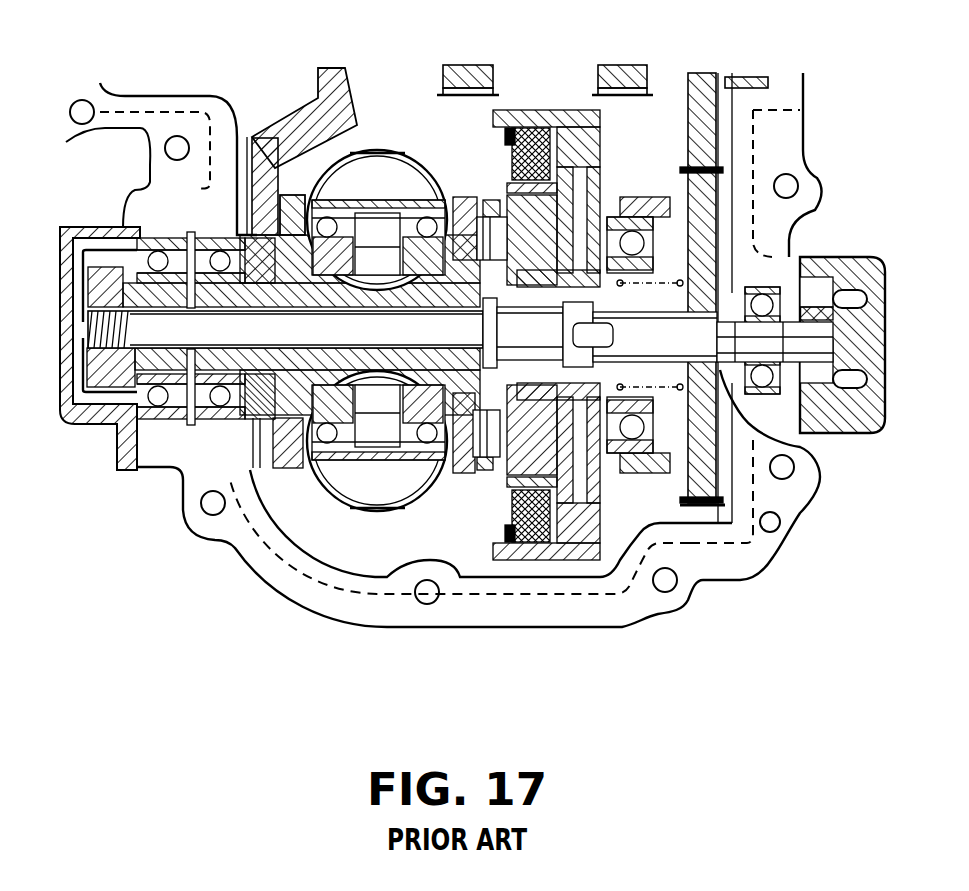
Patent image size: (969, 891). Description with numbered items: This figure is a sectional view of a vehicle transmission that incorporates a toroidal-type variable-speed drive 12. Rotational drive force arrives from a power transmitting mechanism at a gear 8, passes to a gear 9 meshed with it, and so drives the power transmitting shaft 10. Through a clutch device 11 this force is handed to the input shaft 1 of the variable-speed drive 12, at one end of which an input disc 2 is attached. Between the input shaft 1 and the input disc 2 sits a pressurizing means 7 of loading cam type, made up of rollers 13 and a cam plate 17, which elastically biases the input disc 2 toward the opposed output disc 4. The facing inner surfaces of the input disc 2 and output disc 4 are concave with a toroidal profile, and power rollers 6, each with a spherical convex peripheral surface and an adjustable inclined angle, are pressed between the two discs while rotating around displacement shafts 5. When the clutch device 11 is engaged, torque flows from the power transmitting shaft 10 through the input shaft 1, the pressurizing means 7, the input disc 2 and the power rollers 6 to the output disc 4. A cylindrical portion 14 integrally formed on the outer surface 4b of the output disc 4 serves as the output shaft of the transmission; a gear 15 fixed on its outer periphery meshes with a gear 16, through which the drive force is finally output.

The input shaft 1 is at (147, 323).
The input disc 2 is at (460, 195).
The output disc 4 is at (295, 198).
The outer surface of the output disc 4b is at (230, 543).
The displacement shaft 5 is at (372, 258).
The power roller 6 is at (383, 173).
The pressurizing means 7 is at (490, 135).
The gear 8 is at (690, 78).
The gear 9 is at (703, 247).
The power transmitting shaft 10 is at (800, 447).
The clutch device 11 is at (540, 105).
The variable-speed drive 12 is at (413, 120).
The roller 13 is at (483, 227).
The cylindrical portion 14 is at (200, 418).
The gear 15 is at (243, 420).
The gear 16 is at (255, 138).
The cam plate 17 is at (460, 470).